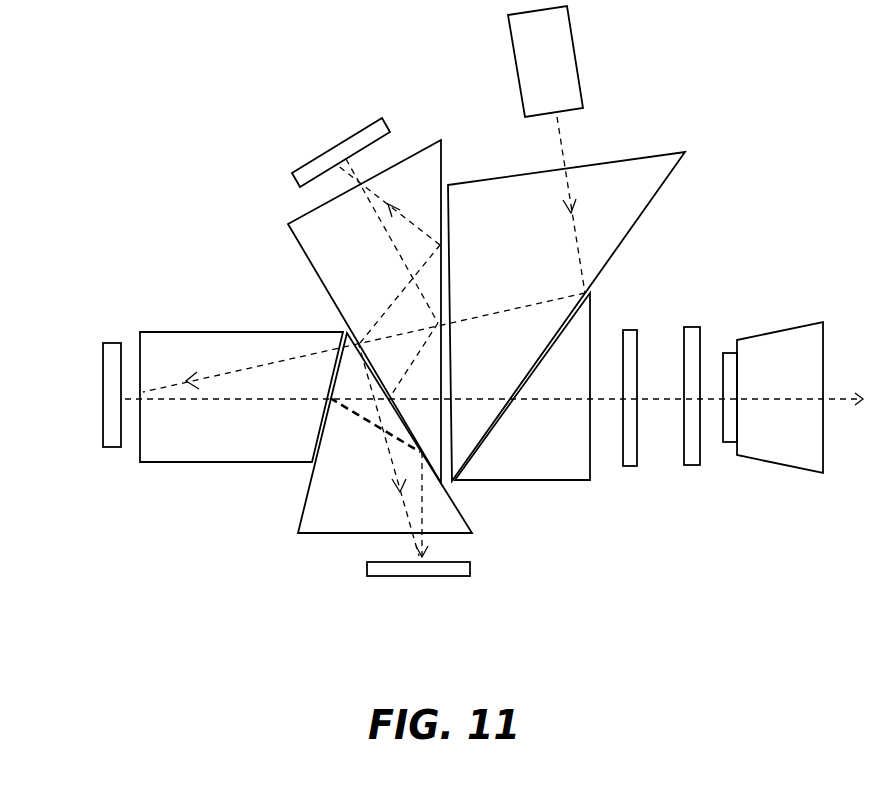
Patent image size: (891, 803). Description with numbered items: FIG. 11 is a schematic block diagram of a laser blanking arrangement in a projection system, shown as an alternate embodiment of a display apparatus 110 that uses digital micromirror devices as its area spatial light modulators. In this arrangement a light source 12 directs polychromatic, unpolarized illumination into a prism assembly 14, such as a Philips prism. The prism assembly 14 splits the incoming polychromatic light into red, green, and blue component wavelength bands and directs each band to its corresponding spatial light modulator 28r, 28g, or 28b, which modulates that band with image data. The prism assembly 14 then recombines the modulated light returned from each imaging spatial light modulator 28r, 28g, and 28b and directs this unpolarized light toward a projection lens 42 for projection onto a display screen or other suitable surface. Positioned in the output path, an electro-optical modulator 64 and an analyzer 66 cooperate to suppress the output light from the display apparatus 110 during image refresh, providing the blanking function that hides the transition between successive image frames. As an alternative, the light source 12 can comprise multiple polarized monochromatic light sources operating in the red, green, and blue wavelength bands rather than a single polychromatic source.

The display apparatus 110 is at (161, 189).
The light source 12 is at (577, 46).
The prism assembly 14 is at (320, 534).
The spatial light modulator 28r is at (328, 150).
The spatial light modulator 28g is at (103, 407).
The spatial light modulator 28b is at (423, 577).
The electro-optical modulator 64 is at (633, 470).
The analyzer 66 is at (688, 468).
The projection lens 42 is at (782, 463).